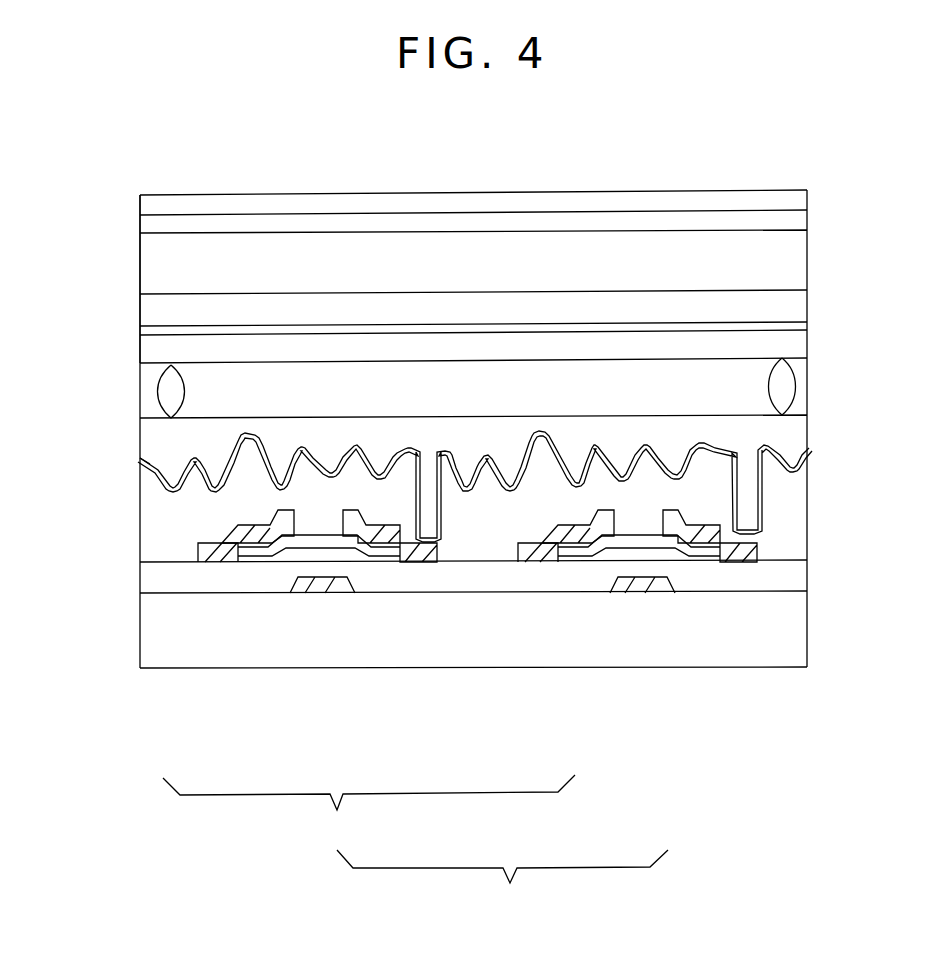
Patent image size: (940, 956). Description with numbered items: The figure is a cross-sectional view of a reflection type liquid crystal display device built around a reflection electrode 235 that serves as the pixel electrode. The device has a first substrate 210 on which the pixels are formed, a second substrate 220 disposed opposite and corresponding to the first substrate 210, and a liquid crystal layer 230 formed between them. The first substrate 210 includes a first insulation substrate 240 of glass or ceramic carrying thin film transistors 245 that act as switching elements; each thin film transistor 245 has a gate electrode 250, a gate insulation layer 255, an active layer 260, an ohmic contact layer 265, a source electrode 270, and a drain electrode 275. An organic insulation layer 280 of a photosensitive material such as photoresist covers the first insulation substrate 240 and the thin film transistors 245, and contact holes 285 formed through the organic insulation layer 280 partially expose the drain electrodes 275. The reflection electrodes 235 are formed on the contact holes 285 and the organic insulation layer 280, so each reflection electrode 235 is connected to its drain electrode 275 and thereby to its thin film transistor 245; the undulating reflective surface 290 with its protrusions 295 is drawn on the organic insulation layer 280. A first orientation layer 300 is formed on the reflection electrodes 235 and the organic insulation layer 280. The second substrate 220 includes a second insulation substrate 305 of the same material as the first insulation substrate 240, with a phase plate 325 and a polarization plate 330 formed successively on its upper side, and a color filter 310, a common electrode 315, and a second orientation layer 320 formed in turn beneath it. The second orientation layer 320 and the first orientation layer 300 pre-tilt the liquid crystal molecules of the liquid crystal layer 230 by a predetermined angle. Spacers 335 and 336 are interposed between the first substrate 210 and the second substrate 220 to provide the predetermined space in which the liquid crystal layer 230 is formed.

The first substrate 210 is at (502, 885).
The second substrate 220 is at (130, 207).
The liquid crystal layer 230 is at (202, 398).
The reflection electrode 235 is at (145, 458).
The first insulation substrate 240 is at (680, 655).
The thin film transistor 245 is at (369, 813).
The gate electrode 250 is at (317, 593).
The gate insulation layer 255 is at (237, 583).
The active layer 260 is at (375, 562).
The ohmic contact layer 265 is at (392, 555).
The source electrode 270 is at (202, 562).
The drain electrode 275 is at (430, 558).
The organic insulation layer 280 is at (808, 505).
The contact hole 285 is at (443, 552).
The reflective electrode 290 is at (158, 467).
The embossed protrusion pattern 295 is at (303, 460).
The first orientation layer 300 is at (808, 428).
The second insulation substrate 305 is at (804, 247).
The color filter 310 is at (803, 307).
The common electrode 315 is at (808, 318).
The second orientation layer 320 is at (808, 345).
The phase plate 325 is at (371, 220).
The polarization plate 330 is at (287, 202).
The spacer 335 is at (790, 385).
The spacer 336 is at (150, 383).